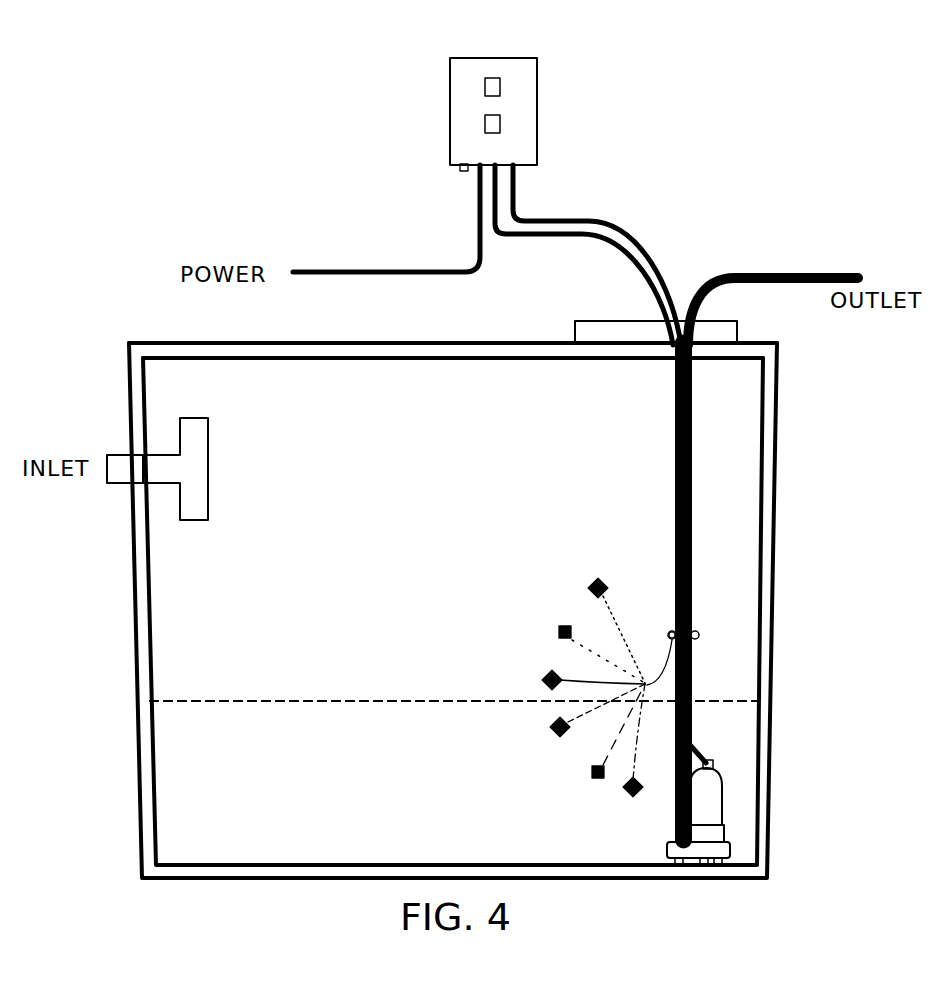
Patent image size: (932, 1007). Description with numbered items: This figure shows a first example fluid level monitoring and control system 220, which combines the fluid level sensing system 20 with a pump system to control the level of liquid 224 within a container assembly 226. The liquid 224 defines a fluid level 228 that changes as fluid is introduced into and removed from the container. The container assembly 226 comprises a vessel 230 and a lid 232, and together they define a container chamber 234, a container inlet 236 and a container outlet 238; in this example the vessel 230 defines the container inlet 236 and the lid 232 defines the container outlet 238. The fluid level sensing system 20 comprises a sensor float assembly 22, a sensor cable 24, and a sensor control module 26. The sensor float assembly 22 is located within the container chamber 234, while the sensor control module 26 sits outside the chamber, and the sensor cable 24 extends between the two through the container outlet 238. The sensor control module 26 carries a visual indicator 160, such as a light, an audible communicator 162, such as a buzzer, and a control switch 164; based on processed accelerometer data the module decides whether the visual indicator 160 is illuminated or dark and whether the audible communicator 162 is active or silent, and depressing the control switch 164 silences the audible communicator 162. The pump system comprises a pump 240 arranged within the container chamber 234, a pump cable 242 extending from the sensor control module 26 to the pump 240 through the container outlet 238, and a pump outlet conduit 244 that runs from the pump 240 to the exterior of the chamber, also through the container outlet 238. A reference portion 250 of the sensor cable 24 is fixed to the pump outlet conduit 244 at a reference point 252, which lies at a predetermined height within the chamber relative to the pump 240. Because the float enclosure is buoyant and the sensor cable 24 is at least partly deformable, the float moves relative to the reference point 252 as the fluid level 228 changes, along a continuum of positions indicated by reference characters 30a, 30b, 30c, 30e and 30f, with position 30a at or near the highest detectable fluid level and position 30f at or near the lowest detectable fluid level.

The fluid level sensing system 20 is at (616, 150).
The sensor float assembly 22 is at (455, 593).
The sensor cable 24 is at (582, 240).
The sensor control module 26 is at (528, 97).
The float enclosure position 30a is at (592, 584).
The float enclosure position 30b is at (558, 631).
The float enclosure position 30c is at (544, 680).
The float enclosure position 30e is at (591, 777).
The float enclosure position 30f is at (628, 796).
The visual indicator 160 is at (496, 78).
The audible communicator 162 is at (462, 170).
The control switch 164 is at (486, 124).
The fluid level monitoring and control system 220 is at (838, 162).
The liquid 224 is at (232, 706).
The container assembly 226 is at (778, 452).
The fluid level 228 is at (330, 706).
The vessel 230 is at (765, 540).
The lid 232 is at (380, 352).
The container chamber 234 is at (355, 459).
The container inlet 236 is at (113, 490).
The container outlet 238 is at (733, 330).
The pump 240 is at (712, 800).
The pump cable 242 is at (595, 220).
The pump outlet conduit 244 is at (798, 272).
The reference portion 250 is at (699, 635).
The reference point 252 is at (667, 634).